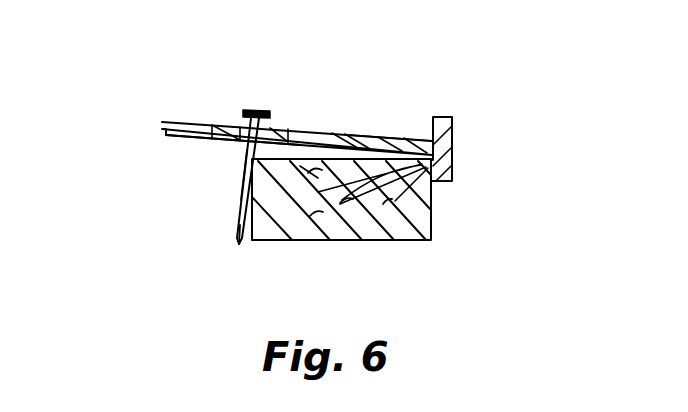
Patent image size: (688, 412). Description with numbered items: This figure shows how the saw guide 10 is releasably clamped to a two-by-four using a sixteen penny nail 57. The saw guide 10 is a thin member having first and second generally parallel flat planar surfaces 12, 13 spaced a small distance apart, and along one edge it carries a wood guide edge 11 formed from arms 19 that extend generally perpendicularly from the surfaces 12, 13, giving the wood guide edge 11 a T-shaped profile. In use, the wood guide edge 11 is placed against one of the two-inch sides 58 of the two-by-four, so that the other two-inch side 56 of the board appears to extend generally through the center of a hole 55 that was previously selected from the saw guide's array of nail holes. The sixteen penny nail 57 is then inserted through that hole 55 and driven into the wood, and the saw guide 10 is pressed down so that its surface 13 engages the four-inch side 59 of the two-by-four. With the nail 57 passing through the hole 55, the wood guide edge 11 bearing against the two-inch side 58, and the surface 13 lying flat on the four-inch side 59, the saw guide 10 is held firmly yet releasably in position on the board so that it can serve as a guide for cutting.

The saw guide 10 is at (405, 144).
The wood guide edge 11 is at (433, 117).
The first flat planar surface 12 is at (203, 122).
The second flat planar surface 13 is at (189, 138).
The arms 19 is at (372, 203).
The hole 55 is at (243, 129).
The other 2-inch side 56 is at (238, 222).
The 16 penny nail 57 is at (244, 163).
The 2-inch side 58 is at (432, 194).
The 4-inch side 59 is at (303, 168).